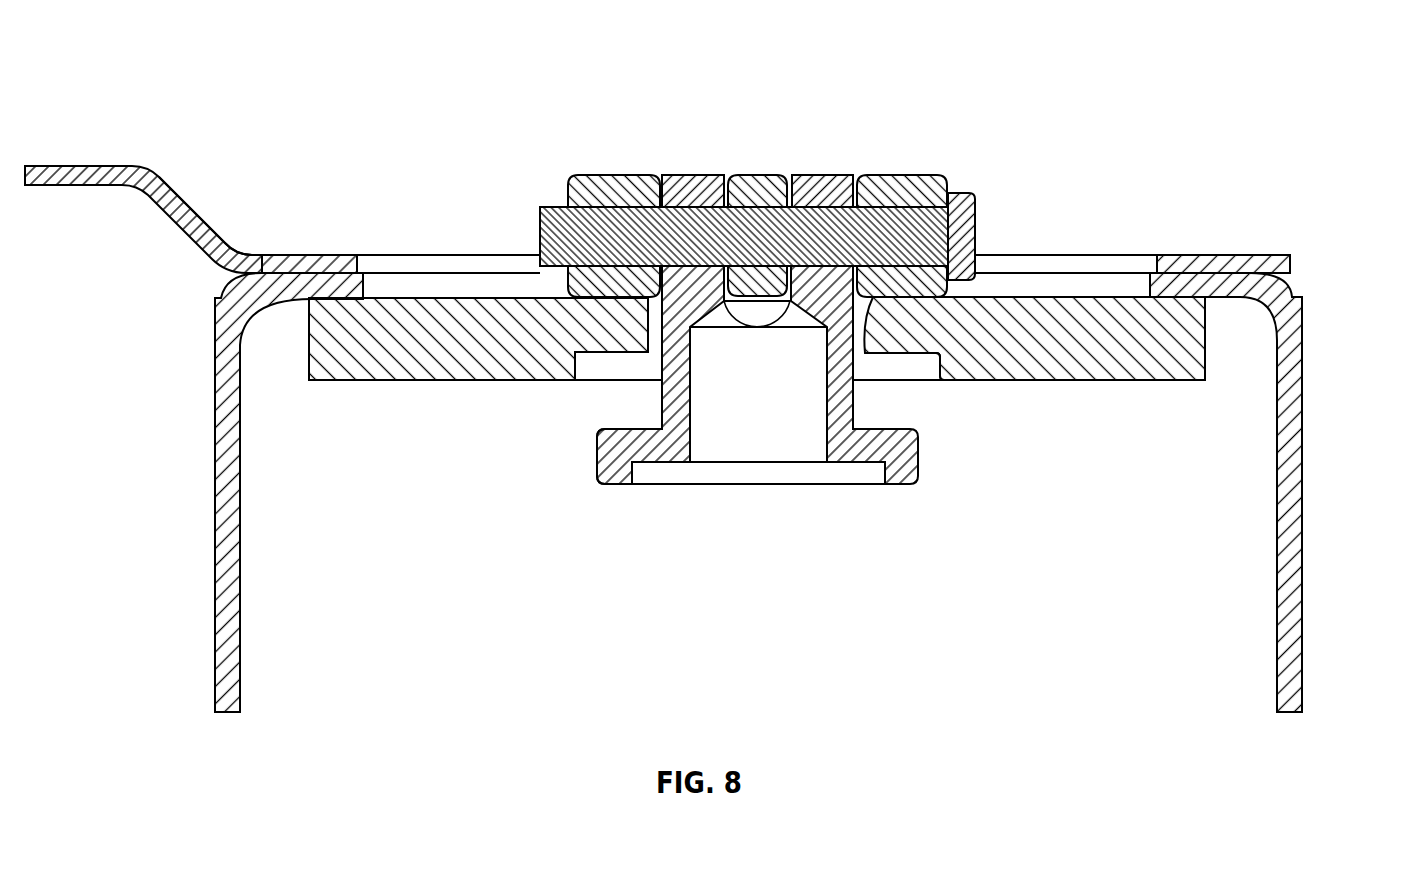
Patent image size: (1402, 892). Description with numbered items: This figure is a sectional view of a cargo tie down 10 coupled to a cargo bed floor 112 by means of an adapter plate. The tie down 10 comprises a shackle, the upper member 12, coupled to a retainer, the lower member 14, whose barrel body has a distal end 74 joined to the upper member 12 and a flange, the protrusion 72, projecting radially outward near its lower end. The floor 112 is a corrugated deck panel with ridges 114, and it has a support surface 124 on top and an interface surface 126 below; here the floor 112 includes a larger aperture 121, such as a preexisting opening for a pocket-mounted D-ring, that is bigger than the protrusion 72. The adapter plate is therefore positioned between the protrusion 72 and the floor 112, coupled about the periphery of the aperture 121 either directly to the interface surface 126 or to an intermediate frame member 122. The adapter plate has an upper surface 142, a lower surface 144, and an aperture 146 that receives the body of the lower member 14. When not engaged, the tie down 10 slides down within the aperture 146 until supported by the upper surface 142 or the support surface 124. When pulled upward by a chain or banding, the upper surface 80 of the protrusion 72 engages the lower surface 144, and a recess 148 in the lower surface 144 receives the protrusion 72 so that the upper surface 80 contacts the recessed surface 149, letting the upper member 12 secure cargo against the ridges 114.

The tie down 10 is at (850, 90).
The upper member 12 is at (612, 186).
The lower member 14 is at (697, 186).
The protrusion 72 is at (840, 412).
The distal end 74 is at (620, 462).
The upper surface 80 is at (603, 430).
The floor 112 is at (1263, 262).
The ridges 114 is at (73, 172).
The apertures 121 is at (1132, 236).
The frame member 122 is at (1293, 570).
The support surface 124 is at (322, 249).
The interface surface 126 is at (207, 257).
The upper surface 142 is at (1072, 290).
The lower surface 144 is at (1133, 390).
The aperture 146 is at (863, 354).
The recess 148 is at (613, 373).
The recessed surface 149 is at (576, 370).